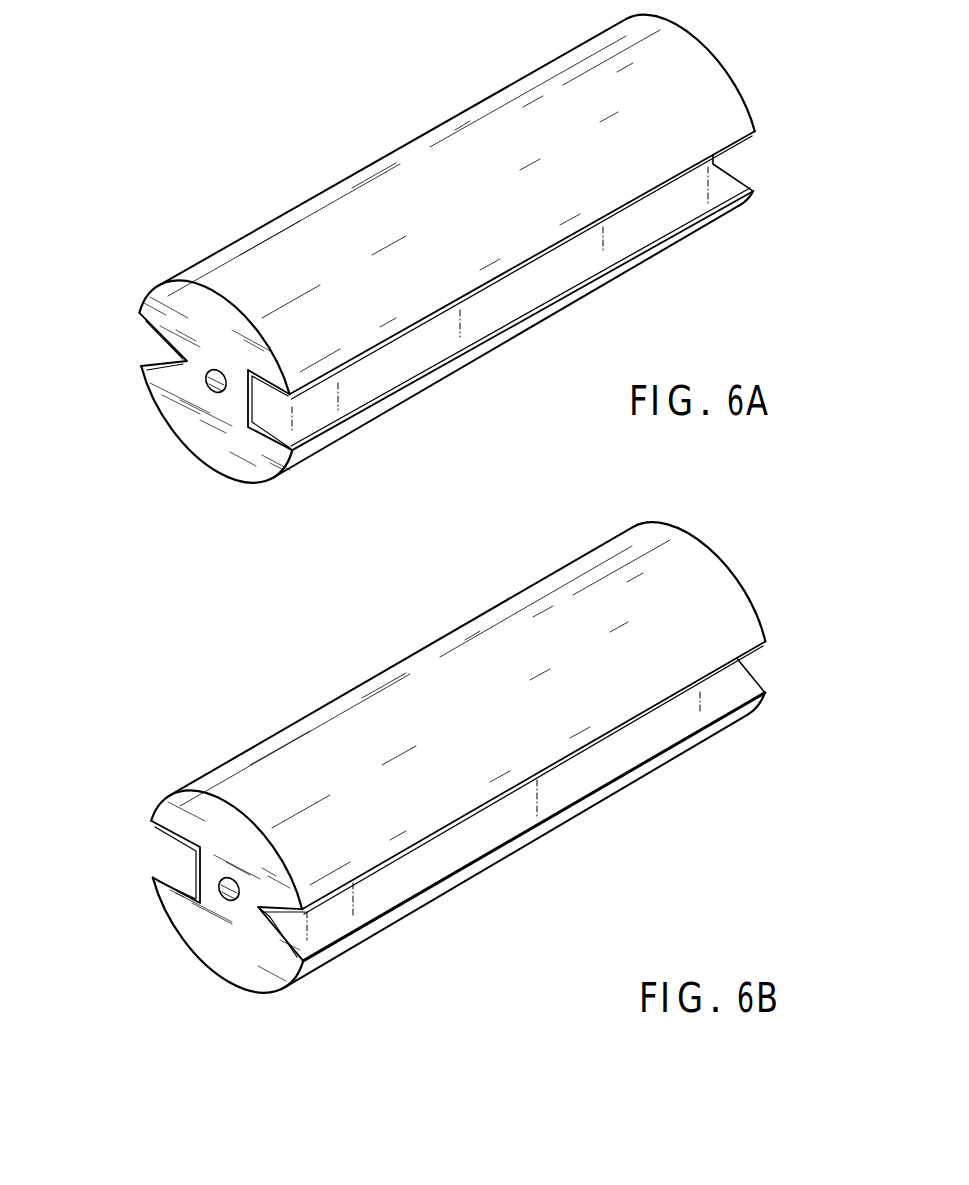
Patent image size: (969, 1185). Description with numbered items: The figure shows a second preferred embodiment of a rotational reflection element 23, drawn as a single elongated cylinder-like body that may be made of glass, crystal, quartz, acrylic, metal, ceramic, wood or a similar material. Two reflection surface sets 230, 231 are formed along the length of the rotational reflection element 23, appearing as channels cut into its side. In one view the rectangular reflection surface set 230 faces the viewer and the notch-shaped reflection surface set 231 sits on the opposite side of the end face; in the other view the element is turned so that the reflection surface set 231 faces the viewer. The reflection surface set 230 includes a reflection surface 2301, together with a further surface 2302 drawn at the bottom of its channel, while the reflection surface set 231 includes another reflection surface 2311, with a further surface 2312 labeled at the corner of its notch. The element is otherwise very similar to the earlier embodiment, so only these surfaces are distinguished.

In FIG. 6A, the rotational reflection element 23 is at (165, 405).
In FIG. 6B, the rotational reflection element 23 is at (181, 912).
In FIG. 6A, the reflection surface set 230 is at (501, 316).
In FIG. 6B, the reflection surface set 230 is at (155, 838).
In FIG. 6A, the reflection surface set 231 is at (140, 337).
In FIG. 6B, the reflection surface set 231 is at (521, 812).
In FIG. 6A, the reflection surface 2301 is at (754, 132).
In FIG. 6A, the bottom wall of slot 2302 is at (263, 447).
In FIG. 6B, the reflection surface 2311 is at (765, 644).
In FIG. 6B, the apex edge of notch 2312 is at (277, 942).